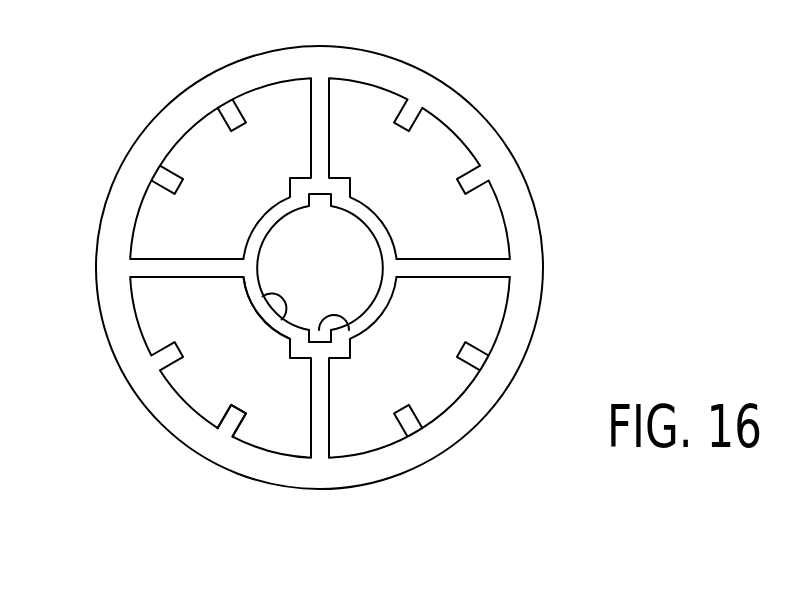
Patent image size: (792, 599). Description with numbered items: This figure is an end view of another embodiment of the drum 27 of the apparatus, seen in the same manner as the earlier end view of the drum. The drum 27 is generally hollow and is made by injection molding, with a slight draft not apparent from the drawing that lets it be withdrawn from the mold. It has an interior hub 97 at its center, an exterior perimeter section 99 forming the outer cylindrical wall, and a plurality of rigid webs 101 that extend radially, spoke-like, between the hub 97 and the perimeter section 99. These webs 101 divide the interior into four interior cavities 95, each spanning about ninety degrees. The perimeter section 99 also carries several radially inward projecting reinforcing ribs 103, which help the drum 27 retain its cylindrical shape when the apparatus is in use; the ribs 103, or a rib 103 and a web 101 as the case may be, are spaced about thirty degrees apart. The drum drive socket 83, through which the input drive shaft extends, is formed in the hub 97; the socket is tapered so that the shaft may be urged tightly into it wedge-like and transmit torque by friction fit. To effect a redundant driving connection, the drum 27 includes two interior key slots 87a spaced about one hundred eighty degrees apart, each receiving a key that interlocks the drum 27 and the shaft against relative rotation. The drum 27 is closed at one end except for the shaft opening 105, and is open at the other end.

The drum 27 is at (515, 83).
The drum drive socket 83 is at (254, 293).
The keyway (interior key slot) 87a is at (340, 317).
The interior cavities 95 is at (201, 170).
The interior hub 97 is at (261, 322).
The exterior perimeter section 99 is at (540, 223).
The rigid webs 101 is at (480, 281).
The reinforcing ribs 103 is at (240, 430).
The shaft opening 105 is at (353, 244).